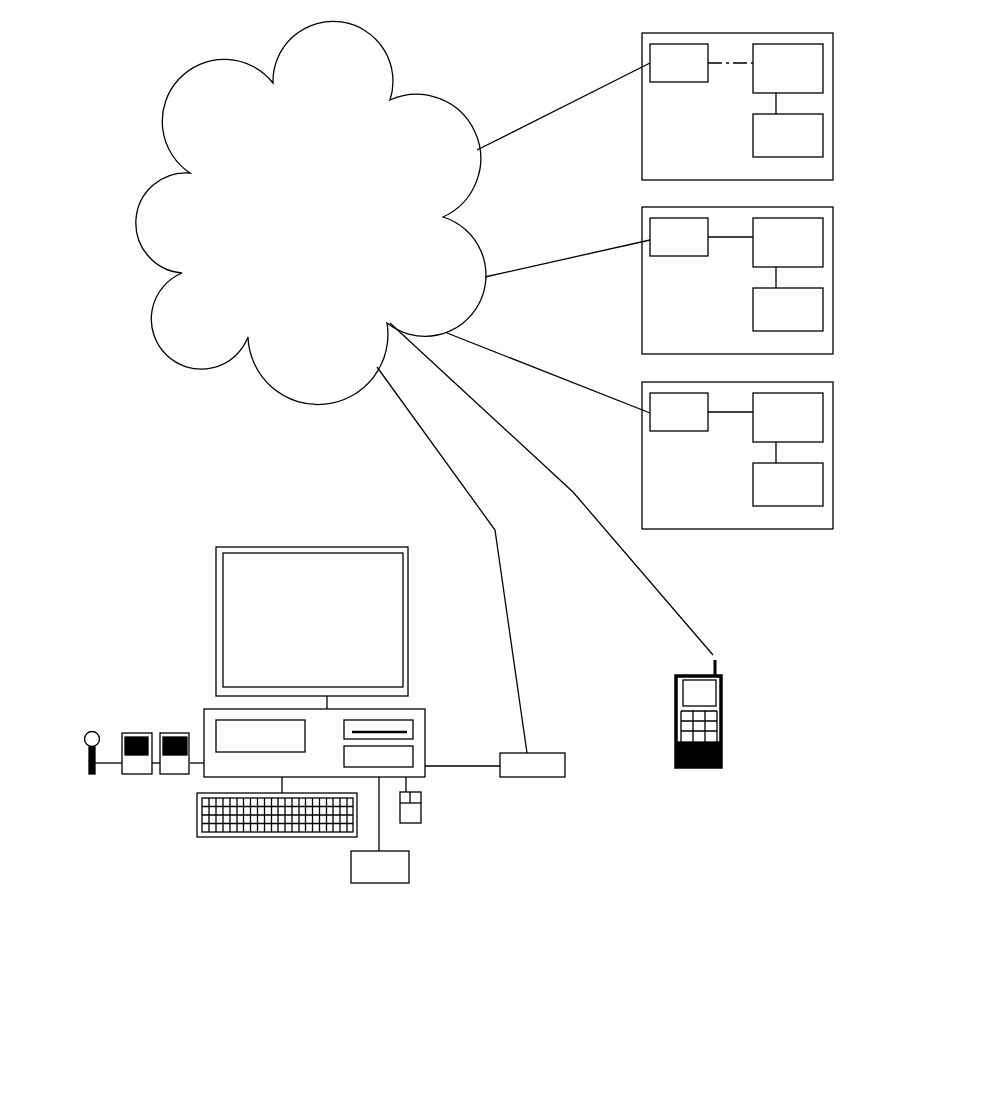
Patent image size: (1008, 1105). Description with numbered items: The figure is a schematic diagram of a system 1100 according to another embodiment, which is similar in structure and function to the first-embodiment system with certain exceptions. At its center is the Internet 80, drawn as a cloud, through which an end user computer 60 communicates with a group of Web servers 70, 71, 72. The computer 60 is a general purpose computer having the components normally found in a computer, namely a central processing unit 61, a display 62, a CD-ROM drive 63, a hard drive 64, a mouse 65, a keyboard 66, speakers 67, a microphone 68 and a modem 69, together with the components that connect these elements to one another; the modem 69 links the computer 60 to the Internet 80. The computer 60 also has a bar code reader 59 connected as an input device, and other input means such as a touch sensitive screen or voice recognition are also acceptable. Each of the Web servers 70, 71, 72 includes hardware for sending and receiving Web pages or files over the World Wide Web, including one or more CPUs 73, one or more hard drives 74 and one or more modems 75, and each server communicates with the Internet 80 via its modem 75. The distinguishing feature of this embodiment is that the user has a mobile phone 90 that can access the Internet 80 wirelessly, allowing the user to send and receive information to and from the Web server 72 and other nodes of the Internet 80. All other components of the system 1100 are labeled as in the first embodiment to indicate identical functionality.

The system 1100 is at (125, 73).
The Internet 80 is at (311, 212).
The Web server 70 is at (837, 77).
The Web server 71 is at (837, 251).
The Web server 72 is at (837, 426).
The CPU 73 is at (788, 253).
The hard drive 74 is at (788, 309).
The modem 75 is at (701, 237).
The end user computer 60 is at (155, 847).
The central processing unit 61 is at (227, 733).
The display 62 is at (312, 621).
The CD-ROM drive 63 is at (405, 723).
The hard drive 64 is at (413, 755).
The mouse 65 is at (415, 827).
The keyboard 66 is at (307, 837).
The speakers 67 is at (152, 720).
The microphone 68 is at (87, 728).
The modem 69 is at (528, 773).
The bar code reader 59 is at (377, 883).
The mobile phone 90 is at (730, 773).